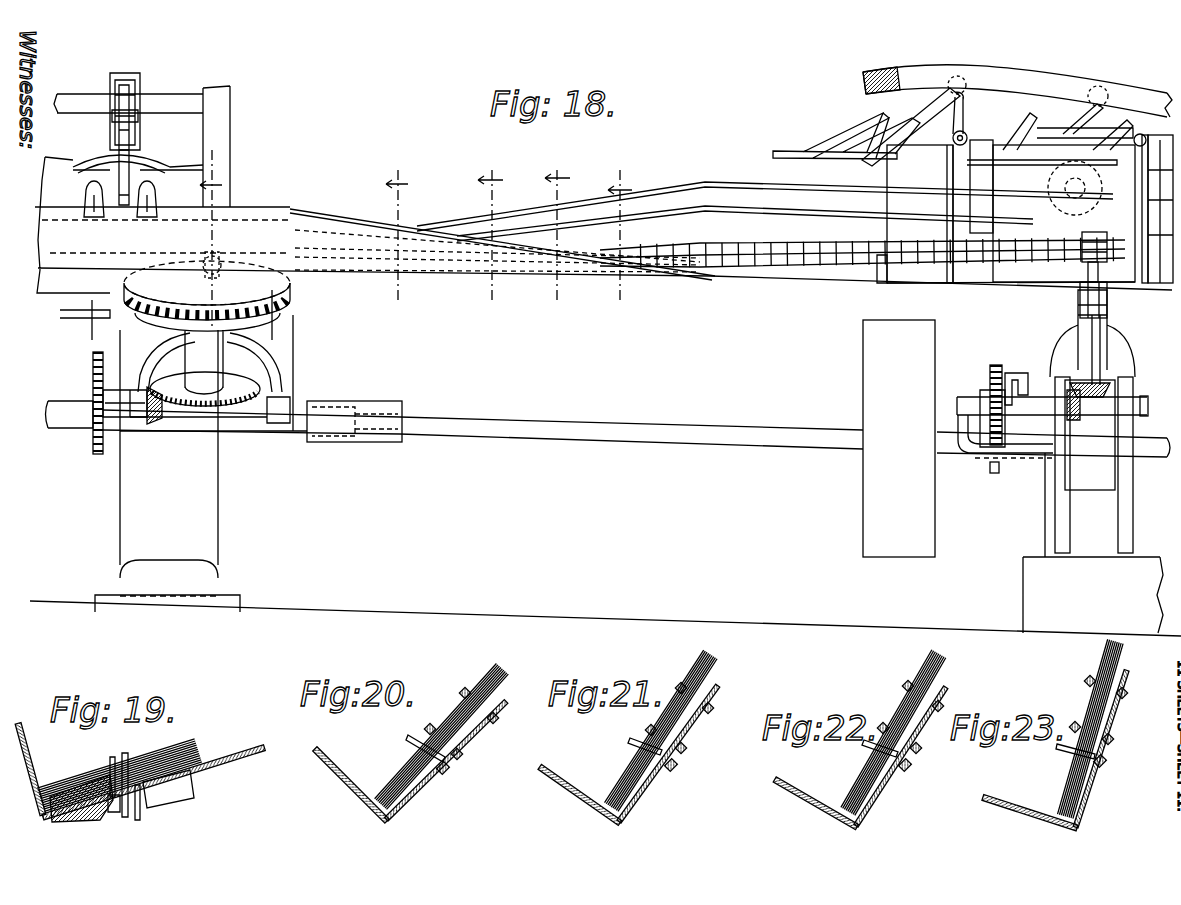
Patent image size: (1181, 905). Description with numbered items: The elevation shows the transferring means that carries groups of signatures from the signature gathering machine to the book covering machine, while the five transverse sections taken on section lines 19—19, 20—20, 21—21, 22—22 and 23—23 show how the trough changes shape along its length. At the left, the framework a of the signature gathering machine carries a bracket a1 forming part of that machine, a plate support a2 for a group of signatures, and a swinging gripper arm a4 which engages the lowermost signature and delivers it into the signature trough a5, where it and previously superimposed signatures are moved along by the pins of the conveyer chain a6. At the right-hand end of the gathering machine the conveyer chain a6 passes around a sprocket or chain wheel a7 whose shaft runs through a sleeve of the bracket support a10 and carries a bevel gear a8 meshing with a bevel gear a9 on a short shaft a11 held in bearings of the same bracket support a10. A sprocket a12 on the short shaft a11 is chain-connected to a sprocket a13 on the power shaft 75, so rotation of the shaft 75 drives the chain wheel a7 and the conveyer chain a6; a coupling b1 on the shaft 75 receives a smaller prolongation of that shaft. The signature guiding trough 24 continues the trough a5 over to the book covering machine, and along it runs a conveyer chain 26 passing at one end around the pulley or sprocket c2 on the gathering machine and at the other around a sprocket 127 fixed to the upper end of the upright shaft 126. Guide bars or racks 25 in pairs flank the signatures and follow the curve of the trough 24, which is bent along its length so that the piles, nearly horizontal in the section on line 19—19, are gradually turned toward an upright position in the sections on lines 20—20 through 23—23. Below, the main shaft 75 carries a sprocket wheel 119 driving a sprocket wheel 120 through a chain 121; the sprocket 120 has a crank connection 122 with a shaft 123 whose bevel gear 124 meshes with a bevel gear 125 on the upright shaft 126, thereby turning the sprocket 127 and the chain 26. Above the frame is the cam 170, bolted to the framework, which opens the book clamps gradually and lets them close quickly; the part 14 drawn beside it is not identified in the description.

In FIG. 18, the framework of the signature gathering machine a is at (167, 471).
In FIG. 18, the bracket a1 is at (229, 139).
In FIG. 18, the plate support a2 is at (148, 161).
In FIG. 18, the swinging gripper arm a4 is at (130, 175).
In FIG. 18, the signature trough a5 is at (603, 225).
In FIG. 19, the signature trough a5 is at (73, 749).
In FIG. 18, the conveyer chain a6 is at (148, 262).
In FIG. 19, the conveyer chain a6 is at (119, 815).
In FIG. 18, the sprocket or chain wheel a7 is at (207, 327).
In FIG. 18, the bevel gear a8 is at (205, 408).
In FIG. 18, the bevel gear a9 is at (154, 426).
In FIG. 18, the bracket support a10 is at (272, 376).
In FIG. 18, the short shaft a11 is at (122, 440).
In FIG. 18, the sprocket a12 is at (96, 365).
In FIG. 18, the sprocket a13 is at (95, 445).
In FIG. 18, the coupling b1 is at (372, 404).
In FIG. 18, the pulley or sprocket c2 is at (220, 262).
In FIG. 19, the pulley or sprocket c2 is at (160, 822).
In FIG. 18, the frame bracket 14 is at (832, 138).
In FIG. 18, the section line 19— 19 is at (214, 239).
In FIG. 18, the section line 20— 20 is at (397, 237).
In FIG. 18, the section line 21— 21 is at (491, 237).
In FIG. 18, the section line 22— 22 is at (556, 237).
In FIG. 18, the section line 23— 23 is at (619, 237).
In FIG. 18, the signature guiding trough 24 is at (328, 214).
In FIG. 19, the signature guiding trough 24 is at (140, 771).
In FIG. 20, the signature guiding trough 24 is at (350, 786).
In FIG. 21, the signature guiding trough 24 is at (582, 798).
In FIG. 22, the signature guiding trough 24 is at (812, 800).
In FIG. 23, the signature guiding trough 24 is at (1037, 815).
In FIG. 18, the guide bars or racks 25 is at (785, 208).
In FIG. 20, the guide bars or racks 25 is at (465, 688).
In FIG. 21, the guide bars or racks 25 is at (683, 682).
In FIG. 22, the guide bars or racks 25 is at (903, 682).
In FIG. 23, the guide bars or racks 25 is at (1086, 678).
In FIG. 18, the conveyer chain 26 is at (875, 268).
In FIG. 19, the conveyer chain 26 is at (128, 790).
In FIG. 20, the conveyer chain 26 is at (447, 774).
In FIG. 21, the conveyer chain 26 is at (676, 772).
In FIG. 22, the conveyer chain 26 is at (910, 773).
In FIG. 23, the conveyer chain 26 is at (1106, 763).
In FIG. 18, the power shaft 75 is at (70, 403).
In FIG. 18, the sprocket wheel 119 is at (989, 468).
In FIG. 18, the sprocket wheel 120 is at (990, 380).
In FIG. 18, the chain 121 is at (996, 364).
In FIG. 18, the crank connection 122 is at (1022, 372).
In FIG. 18, the shaft 123 is at (1052, 412).
In FIG. 18, the bevel gear 124 is at (1040, 448).
In FIG. 18, the bevel gear 125 is at (1112, 383).
In FIG. 18, the upright shaft 126 is at (1087, 273).
In FIG. 18, the sprocket 127 is at (1112, 228).
In FIG. 18, the cam 170 is at (1015, 80).